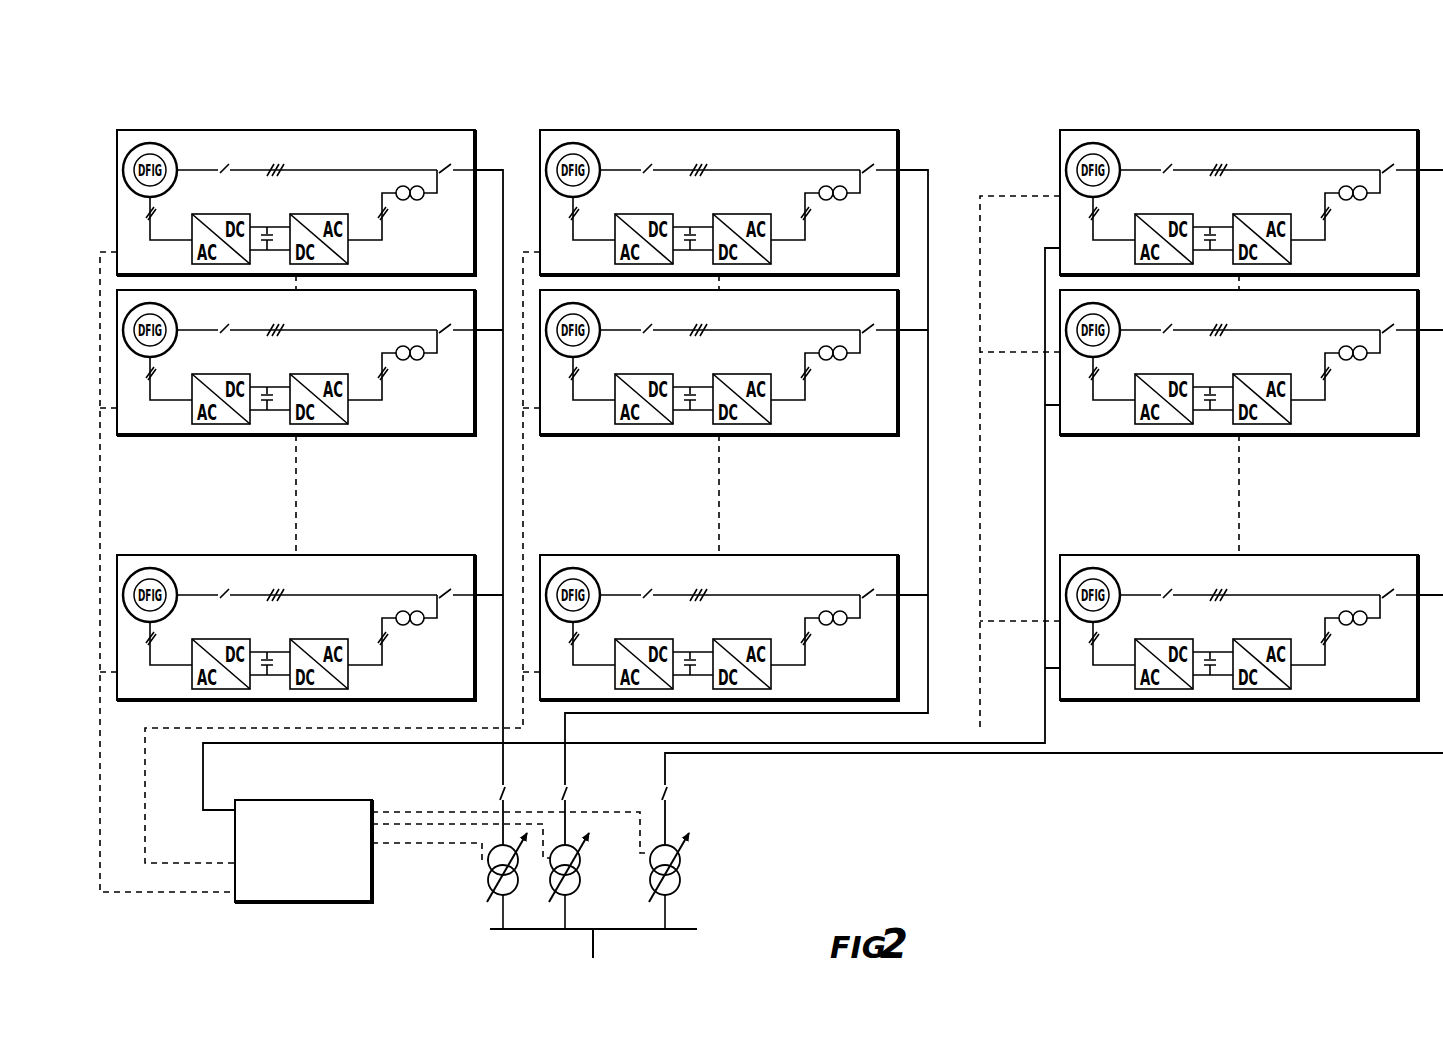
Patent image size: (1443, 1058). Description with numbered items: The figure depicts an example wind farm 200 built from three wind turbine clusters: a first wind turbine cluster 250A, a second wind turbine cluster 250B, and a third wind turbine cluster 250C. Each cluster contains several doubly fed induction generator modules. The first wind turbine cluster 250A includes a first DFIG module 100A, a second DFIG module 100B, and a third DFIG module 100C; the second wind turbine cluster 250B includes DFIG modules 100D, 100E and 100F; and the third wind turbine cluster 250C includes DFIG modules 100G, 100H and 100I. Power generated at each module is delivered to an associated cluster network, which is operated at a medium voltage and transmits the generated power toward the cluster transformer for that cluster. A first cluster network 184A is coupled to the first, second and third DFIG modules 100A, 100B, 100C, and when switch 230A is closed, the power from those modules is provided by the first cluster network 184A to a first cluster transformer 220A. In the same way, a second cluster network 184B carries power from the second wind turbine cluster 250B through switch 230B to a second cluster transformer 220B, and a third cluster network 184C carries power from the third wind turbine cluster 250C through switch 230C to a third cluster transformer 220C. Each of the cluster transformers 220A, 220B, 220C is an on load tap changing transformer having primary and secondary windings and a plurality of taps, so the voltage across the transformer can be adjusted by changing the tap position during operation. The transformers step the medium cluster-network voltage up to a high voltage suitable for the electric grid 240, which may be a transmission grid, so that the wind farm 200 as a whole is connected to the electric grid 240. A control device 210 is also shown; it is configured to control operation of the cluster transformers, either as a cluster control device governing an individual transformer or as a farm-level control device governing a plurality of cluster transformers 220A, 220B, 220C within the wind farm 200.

The first DFIG module 100A is at (422, 112).
The second DFIG module 100B is at (412, 436).
The third DFIG module 100C is at (412, 555).
The DFIG module 100D is at (845, 112).
The DFIG module 100E is at (835, 436).
The DFIG module 100F is at (835, 555).
The DFIG module 100G is at (1365, 112).
The DFIG module 100H is at (1355, 436).
The DFIG module 100I is at (1355, 555).
The first cluster network 184A is at (499, 156).
The second cluster network 184B is at (921, 156).
The third cluster network 184C is at (1043, 327).
The first wind turbine cluster 250A is at (287, 469).
The second wind turbine cluster 250B is at (521, 454).
The third wind turbine cluster 250C is at (1054, 445).
The control device 210 is at (305, 903).
The first cluster transformer 220A is at (470, 887).
The second cluster transformer 220B is at (613, 875).
The third cluster transformer 220C is at (706, 889).
The switch 230A is at (493, 776).
The switch 230B is at (603, 775).
The switch 230C is at (675, 791).
The electric grid 240 is at (593, 946).
The wind farm 200 is at (1082, 906).